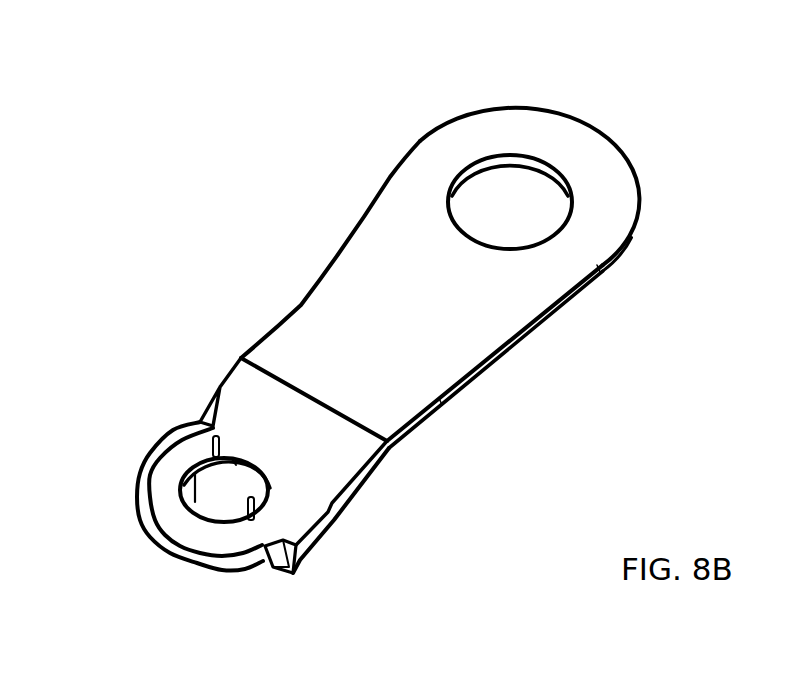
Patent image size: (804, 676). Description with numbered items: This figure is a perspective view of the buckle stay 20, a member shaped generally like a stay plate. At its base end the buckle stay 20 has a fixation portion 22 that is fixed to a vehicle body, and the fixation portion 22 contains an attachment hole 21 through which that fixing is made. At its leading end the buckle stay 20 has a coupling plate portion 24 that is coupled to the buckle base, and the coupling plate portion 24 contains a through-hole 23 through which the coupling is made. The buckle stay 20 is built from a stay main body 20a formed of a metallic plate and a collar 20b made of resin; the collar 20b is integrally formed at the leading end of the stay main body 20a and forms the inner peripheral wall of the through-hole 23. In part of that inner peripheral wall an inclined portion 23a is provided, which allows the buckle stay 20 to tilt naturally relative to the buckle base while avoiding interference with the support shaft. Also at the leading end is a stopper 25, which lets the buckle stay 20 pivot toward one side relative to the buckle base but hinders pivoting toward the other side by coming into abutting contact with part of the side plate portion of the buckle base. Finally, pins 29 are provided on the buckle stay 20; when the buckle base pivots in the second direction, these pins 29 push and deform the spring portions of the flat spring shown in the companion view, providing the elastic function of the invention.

The buckle stay 20 is at (350, 188).
The stay main body 20a is at (423, 418).
The collar 20b is at (377, 480).
The attachment hole 21 is at (524, 172).
The fixation portion 22 is at (470, 133).
The through-hole 23 is at (202, 510).
The inclined portion 23a is at (146, 530).
The coupling plate portion 24 is at (231, 543).
The stopper 25 is at (277, 570).
The pins 29 is at (212, 445).